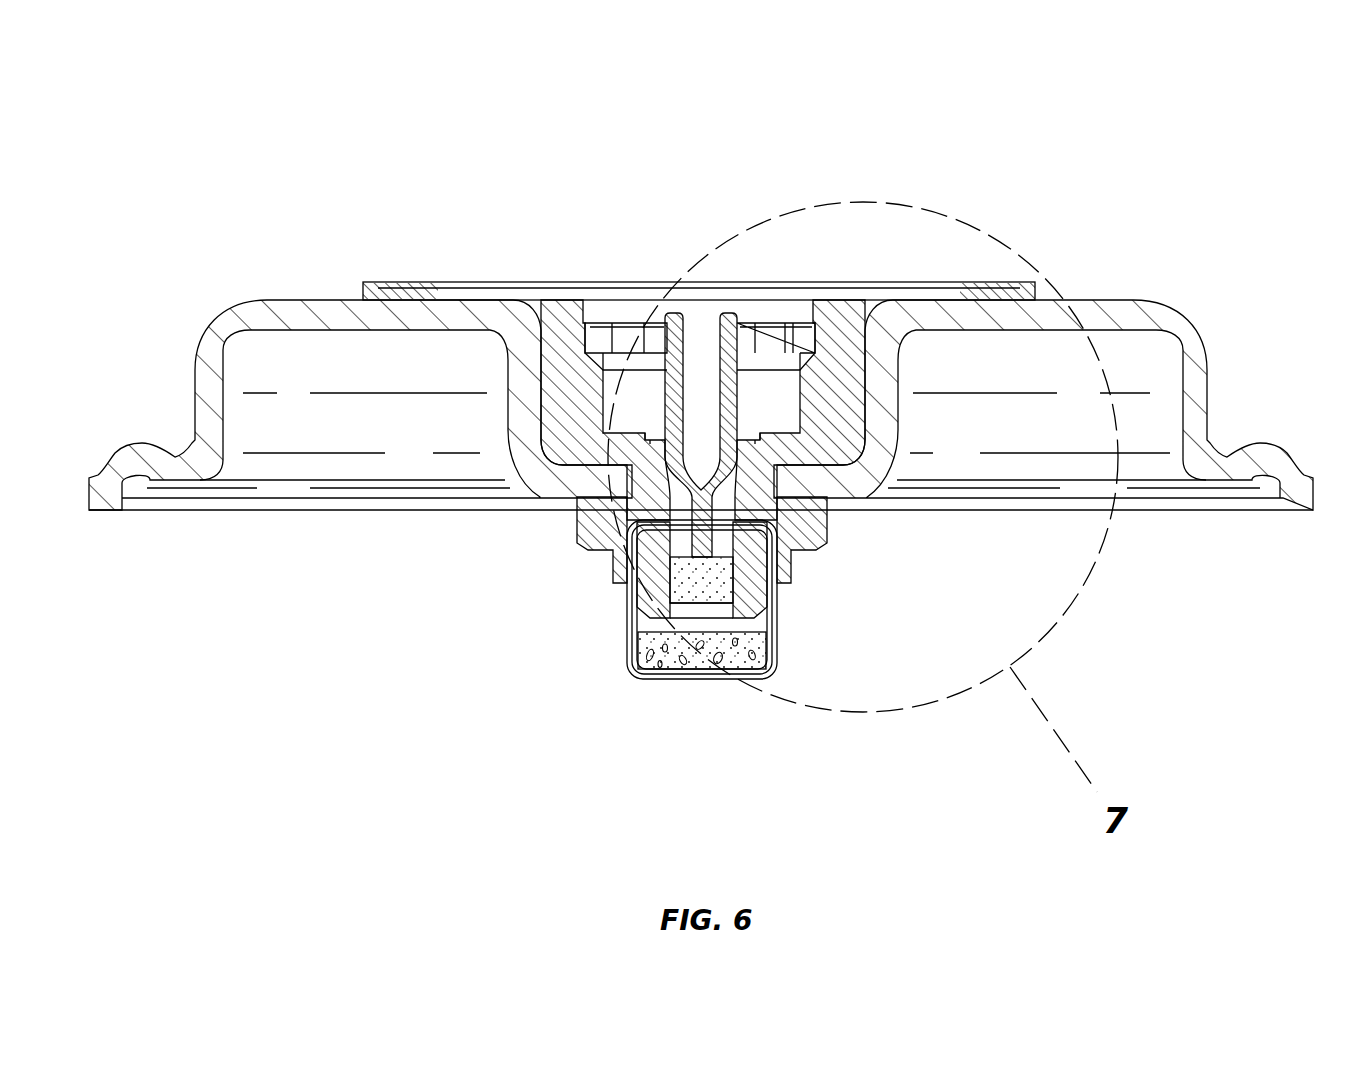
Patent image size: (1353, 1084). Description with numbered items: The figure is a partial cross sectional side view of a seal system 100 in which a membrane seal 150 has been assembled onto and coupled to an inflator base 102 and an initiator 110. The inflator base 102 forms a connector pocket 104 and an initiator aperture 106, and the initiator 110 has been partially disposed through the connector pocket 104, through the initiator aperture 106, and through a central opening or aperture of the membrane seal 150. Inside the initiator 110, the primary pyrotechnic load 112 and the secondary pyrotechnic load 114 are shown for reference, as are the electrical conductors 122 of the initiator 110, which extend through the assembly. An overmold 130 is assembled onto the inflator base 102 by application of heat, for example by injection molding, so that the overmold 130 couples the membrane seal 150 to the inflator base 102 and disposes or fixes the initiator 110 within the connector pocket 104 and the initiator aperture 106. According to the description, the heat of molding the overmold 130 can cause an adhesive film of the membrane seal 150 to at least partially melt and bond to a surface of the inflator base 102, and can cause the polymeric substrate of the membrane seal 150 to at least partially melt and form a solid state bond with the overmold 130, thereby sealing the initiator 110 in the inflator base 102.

The seal system 100 is at (264, 127).
The inflator base 102 is at (258, 300).
The connector pocket 104 is at (795, 258).
The initiator aperture 106 is at (782, 563).
The initiator 110 is at (667, 680).
The primary pyrotechnic load 112 is at (722, 575).
The secondary pyrotechnic load 114 is at (730, 648).
The electrical conductors 122 is at (715, 390).
The overmold 130 is at (583, 300).
The membrane seal 150 is at (480, 282).